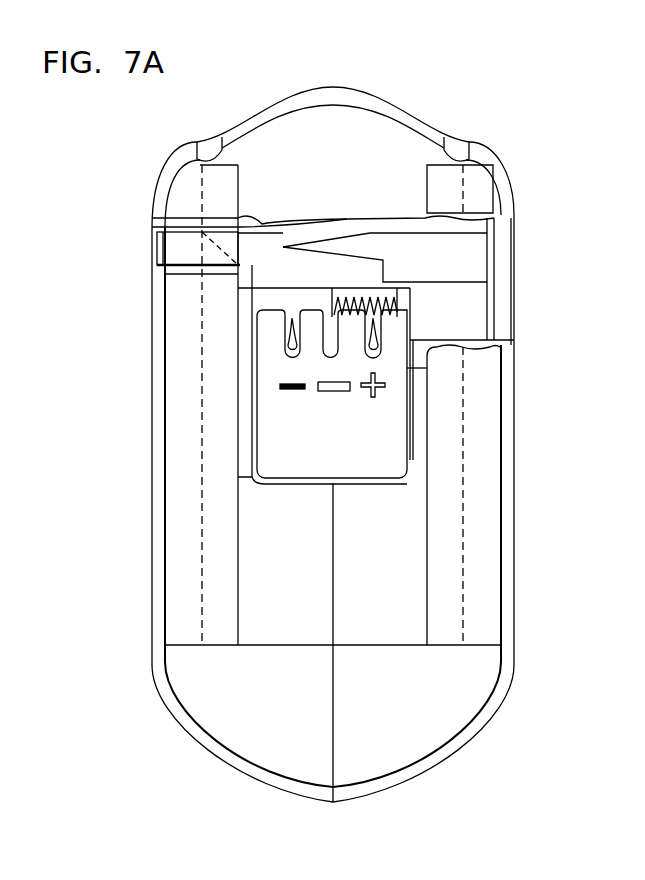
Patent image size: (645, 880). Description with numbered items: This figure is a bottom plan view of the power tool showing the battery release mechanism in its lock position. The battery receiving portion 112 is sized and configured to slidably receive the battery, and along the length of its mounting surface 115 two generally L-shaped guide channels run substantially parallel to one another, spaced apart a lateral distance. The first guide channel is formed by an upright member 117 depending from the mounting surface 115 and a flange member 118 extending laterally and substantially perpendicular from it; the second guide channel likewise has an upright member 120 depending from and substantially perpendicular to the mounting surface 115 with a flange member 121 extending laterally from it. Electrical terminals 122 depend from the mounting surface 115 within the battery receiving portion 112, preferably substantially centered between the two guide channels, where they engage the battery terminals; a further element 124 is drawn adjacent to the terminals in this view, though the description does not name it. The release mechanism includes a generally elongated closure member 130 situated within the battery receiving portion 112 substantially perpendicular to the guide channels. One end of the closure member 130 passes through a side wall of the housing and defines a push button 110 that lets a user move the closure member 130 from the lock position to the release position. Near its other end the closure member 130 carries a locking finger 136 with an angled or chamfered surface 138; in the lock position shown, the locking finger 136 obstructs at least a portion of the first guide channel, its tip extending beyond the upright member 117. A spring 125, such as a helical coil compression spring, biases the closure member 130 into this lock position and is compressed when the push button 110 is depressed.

The push button 110 is at (515, 302).
The battery receiving portion 112 is at (405, 95).
The mounting surface 115 is at (353, 161).
The upright member 117 is at (203, 441).
The flange member 118 is at (213, 372).
The upright member 120 is at (465, 459).
The flange member 121 is at (443, 393).
The electrical terminals 122 is at (333, 423).
The frame 124 is at (250, 307).
The spring 125 is at (370, 302).
The closure member 130 is at (363, 227).
The locking finger 136 is at (212, 255).
The chamfered surface 138 is at (218, 243).